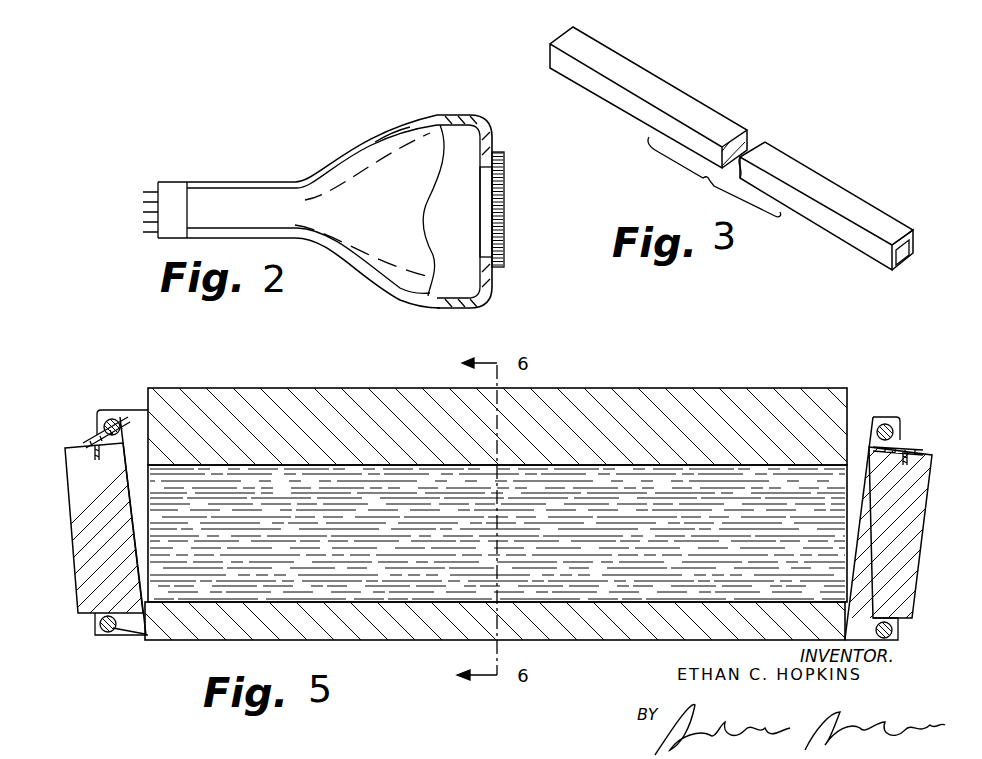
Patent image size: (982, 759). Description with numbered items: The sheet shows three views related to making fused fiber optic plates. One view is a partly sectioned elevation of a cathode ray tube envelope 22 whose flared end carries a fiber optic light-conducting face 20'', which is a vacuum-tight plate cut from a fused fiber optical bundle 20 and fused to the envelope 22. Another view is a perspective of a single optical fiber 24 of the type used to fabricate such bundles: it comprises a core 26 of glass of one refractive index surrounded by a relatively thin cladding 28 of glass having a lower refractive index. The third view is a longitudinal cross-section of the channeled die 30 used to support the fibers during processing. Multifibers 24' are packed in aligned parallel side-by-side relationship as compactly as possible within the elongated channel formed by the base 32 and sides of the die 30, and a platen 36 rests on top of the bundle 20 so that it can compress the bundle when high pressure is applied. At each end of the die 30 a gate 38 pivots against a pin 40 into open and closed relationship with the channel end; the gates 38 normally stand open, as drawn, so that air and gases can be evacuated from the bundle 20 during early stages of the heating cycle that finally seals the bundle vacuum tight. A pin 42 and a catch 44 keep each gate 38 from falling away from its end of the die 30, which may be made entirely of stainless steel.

In FIG. 5, the fused vacuum tight fiber optical bundle 20 is at (497, 604).
In FIG. 2, the fiber optic light-conducting face 20'' is at (512, 211).
In FIG. 2, the cathode ray tube envelope 22 is at (371, 147).
In FIG. 3, the optical fiber 24 is at (731, 142).
In FIG. 5, the multifibers 24' is at (497, 452).
In FIG. 3, the core 26 is at (912, 245).
In FIG. 3, the cladding 28 is at (895, 272).
In FIG. 5, the channeled die 30 is at (491, 502).
In FIG. 5, the base 32 is at (205, 636).
In FIG. 5, the platen 36 is at (347, 389).
In FIG. 5, the gate 38 is at (88, 556).
In FIG. 5, the pin 40 is at (105, 637).
In FIG. 5, the pin 42 is at (98, 410).
In FIG. 5, the catch 44 is at (124, 416).